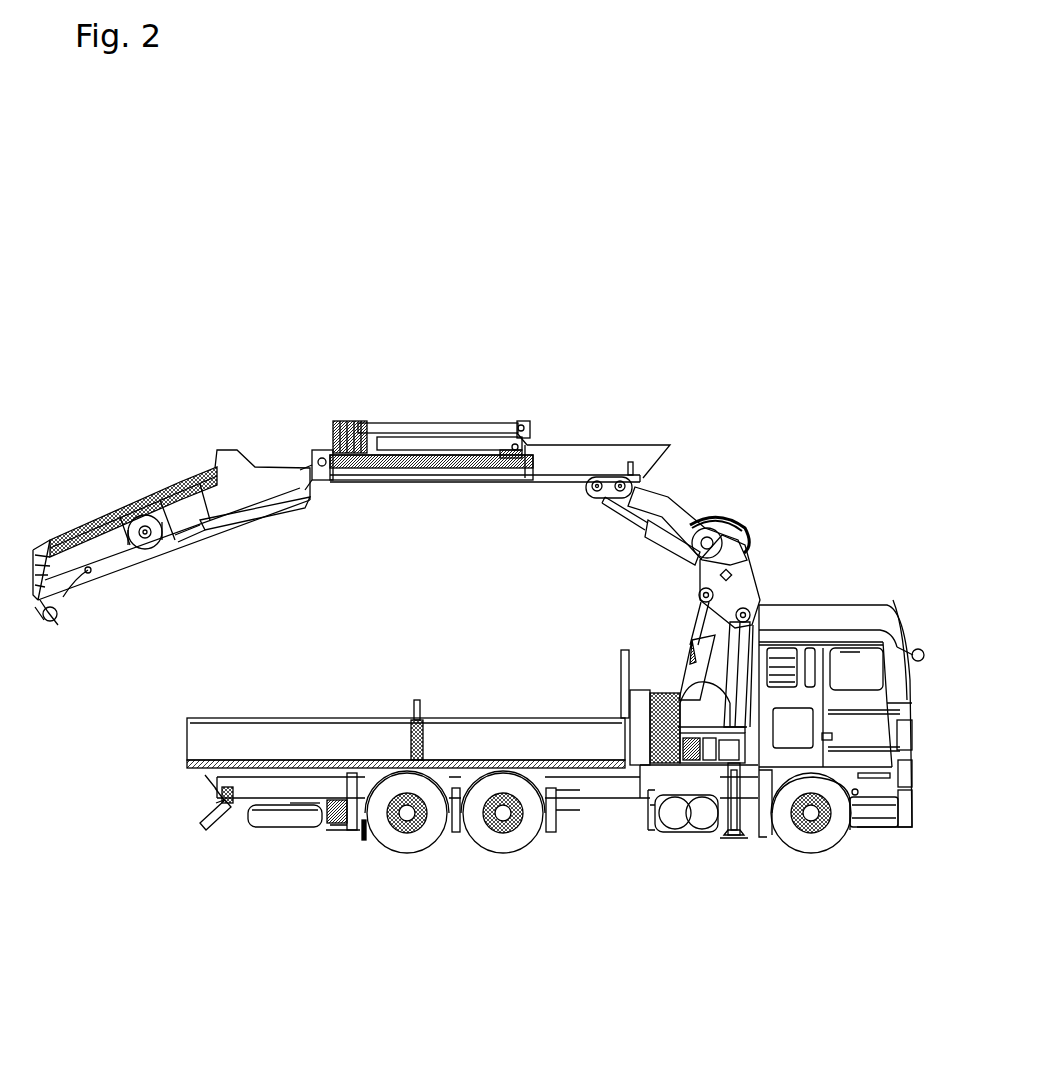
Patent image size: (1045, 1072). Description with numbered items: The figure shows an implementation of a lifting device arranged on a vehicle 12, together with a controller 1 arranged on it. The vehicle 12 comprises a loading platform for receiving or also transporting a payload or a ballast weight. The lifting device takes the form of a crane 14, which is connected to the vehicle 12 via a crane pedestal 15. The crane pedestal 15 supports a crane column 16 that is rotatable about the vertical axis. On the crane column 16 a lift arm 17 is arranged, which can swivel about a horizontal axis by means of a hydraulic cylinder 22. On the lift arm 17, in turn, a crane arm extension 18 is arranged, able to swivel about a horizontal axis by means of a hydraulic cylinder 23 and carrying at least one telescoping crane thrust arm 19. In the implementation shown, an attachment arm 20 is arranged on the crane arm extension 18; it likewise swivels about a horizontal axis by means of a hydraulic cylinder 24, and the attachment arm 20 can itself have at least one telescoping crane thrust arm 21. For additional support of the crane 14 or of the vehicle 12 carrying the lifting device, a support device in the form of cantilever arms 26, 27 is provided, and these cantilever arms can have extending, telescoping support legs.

The controller 1 is at (757, 667).
The vehicle 12 is at (888, 543).
The crane 14 is at (803, 443).
The crane pedestal 15 is at (680, 753).
The crane column 16 is at (718, 753).
The lift arm 17 is at (667, 497).
The crane arm extension 18 is at (582, 415).
The telescoping crane thrust arm 19 is at (313, 455).
The attachment arm 20 is at (163, 478).
The telescoping crane thrust arm 21 is at (33, 612).
The hydraulic cylinder 22 is at (693, 650).
The hydraulic cylinder 23 is at (652, 533).
The hydraulic cylinder 24 is at (248, 505).
The cantilever arm 26 is at (728, 810).
The cantilever arm 27 is at (345, 833).